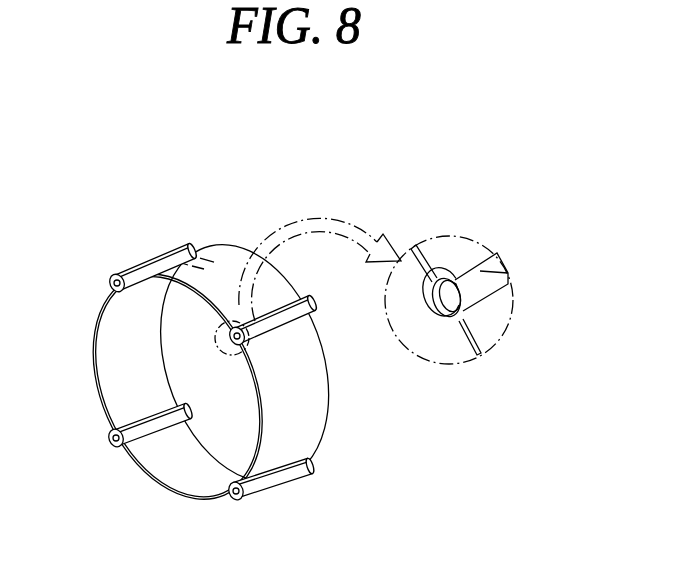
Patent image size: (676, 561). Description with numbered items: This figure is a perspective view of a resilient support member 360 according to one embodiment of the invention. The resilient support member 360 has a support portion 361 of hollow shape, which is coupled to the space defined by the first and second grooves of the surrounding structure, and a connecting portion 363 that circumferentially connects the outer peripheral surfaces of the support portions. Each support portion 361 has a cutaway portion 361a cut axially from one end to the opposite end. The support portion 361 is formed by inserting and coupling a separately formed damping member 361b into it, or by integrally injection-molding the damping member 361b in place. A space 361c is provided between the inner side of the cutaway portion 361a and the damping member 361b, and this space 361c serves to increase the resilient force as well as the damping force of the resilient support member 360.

The resilient support member 360 is at (83, 180).
The support portion 361 is at (140, 430).
The cutaway portion 361a is at (497, 280).
The damping member 361b is at (438, 298).
The space 361c is at (452, 284).
The connecting portion 363 is at (107, 378).